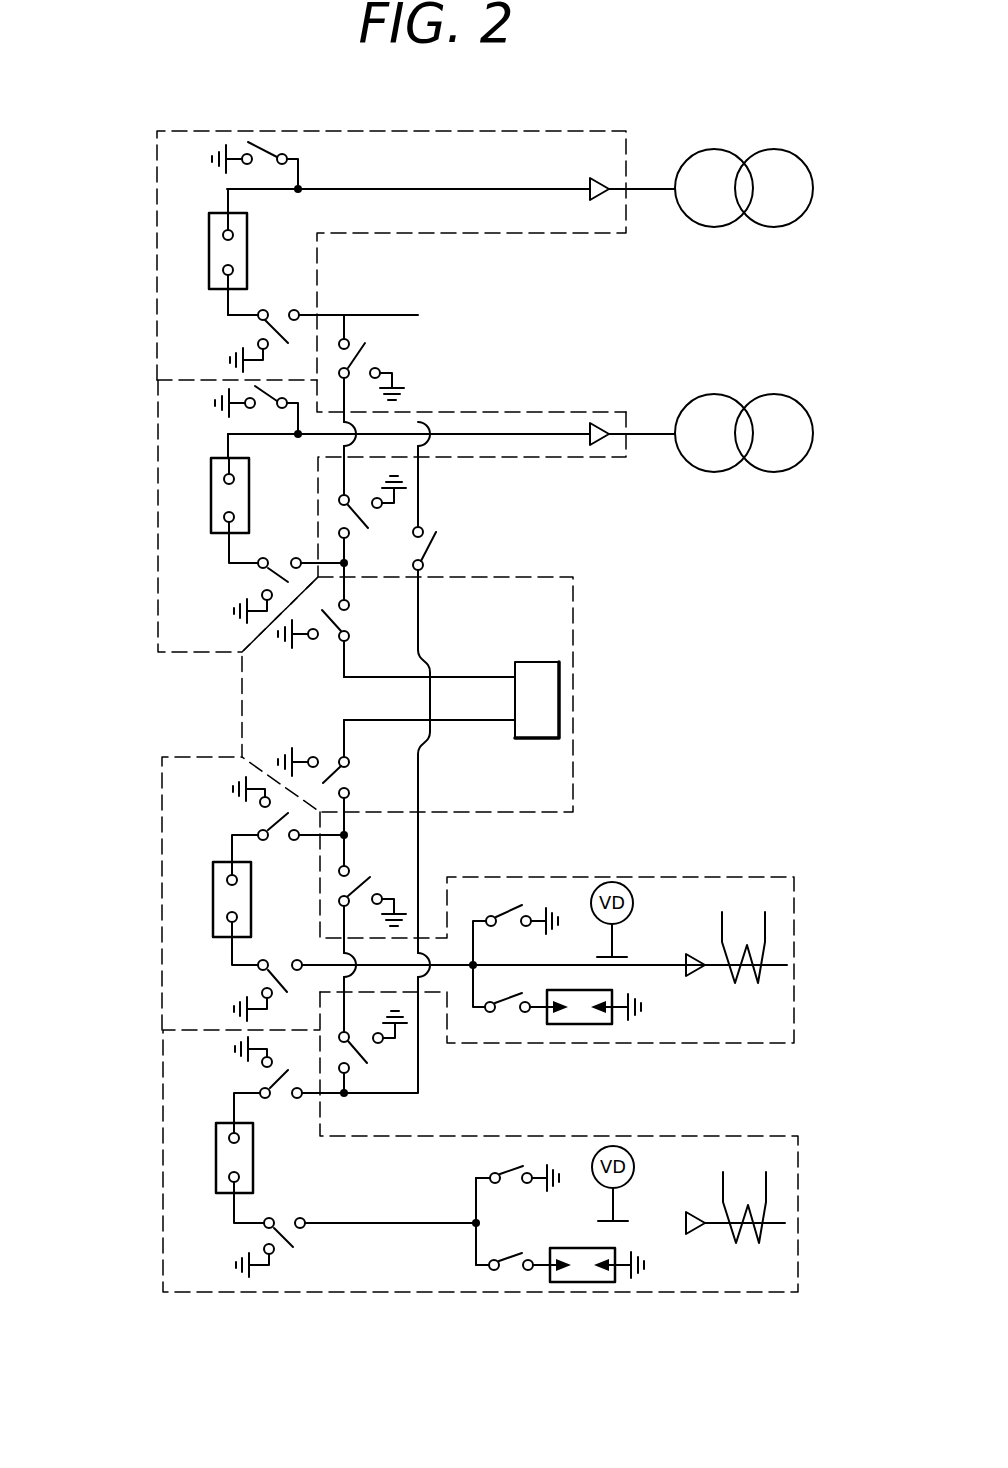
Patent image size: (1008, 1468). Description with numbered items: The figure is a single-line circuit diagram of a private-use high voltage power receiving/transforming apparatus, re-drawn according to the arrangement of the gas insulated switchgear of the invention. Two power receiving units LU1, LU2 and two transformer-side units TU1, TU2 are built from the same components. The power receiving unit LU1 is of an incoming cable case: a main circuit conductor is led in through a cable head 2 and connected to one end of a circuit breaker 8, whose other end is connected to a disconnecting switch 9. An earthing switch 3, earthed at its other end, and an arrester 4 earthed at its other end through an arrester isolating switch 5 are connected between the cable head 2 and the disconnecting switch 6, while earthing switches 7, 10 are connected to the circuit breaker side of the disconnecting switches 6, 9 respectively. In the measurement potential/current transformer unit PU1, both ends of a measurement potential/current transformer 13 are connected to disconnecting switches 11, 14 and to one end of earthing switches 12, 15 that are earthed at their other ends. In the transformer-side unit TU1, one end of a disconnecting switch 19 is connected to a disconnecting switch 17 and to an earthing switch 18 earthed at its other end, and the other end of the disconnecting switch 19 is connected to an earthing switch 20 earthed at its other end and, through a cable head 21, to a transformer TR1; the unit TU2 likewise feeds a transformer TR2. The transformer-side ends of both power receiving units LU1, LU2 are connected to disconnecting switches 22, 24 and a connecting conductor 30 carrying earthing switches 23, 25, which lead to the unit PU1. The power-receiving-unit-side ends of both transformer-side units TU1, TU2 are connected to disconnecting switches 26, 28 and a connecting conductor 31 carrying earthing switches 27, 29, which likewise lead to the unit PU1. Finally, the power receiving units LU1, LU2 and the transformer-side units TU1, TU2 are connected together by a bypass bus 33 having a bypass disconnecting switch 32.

The cable head 2 is at (693, 1212).
The earthing switch 3 is at (520, 1167).
The arrester 4 is at (587, 1285).
The arrester isolating switch 5 is at (520, 1255).
The disconnecting switch 6 is at (290, 1212).
The earthing switch 7 is at (264, 1276).
The circuit breaker 8 is at (216, 1152).
The disconnecting switch 9 is at (282, 1081).
The earthing switch 10 is at (255, 1055).
The disconnecting switch 11 is at (333, 777).
The earthing switch 12 is at (309, 757).
The measurement potential/current transformer 13 is at (540, 741).
The disconnecting switch 14 is at (337, 622).
The earthing switch 15 is at (304, 648).
The disconnecting switch 17 is at (280, 308).
The earthing switch 18 is at (256, 355).
The disconnecting switch 19 is at (209, 240).
The earthing switch 20 is at (265, 148).
The cable head 21 is at (590, 178).
The disconnecting switch 22 is at (367, 1063).
The earthing switch 23 is at (403, 1038).
The disconnecting switch 24 is at (357, 878).
The earthing switch 25 is at (382, 897).
The disconnecting switch 26 is at (360, 348).
The earthing switch 27 is at (388, 371).
The disconnecting switch 28 is at (357, 517).
The earthing switch 29 is at (385, 505).
The connecting conductor 30 is at (341, 918).
The connecting conductor 31 is at (346, 546).
The bypass disconnecting switch 32 is at (430, 545).
The bypass bus 33 is at (420, 840).
The transformer TR1 is at (795, 152).
The transformer TR2 is at (800, 403).
The transformer-side unit TU1 is at (155, 257).
The transformer-side unit TU2 is at (155, 474).
The measurement potential/current transformer unit PU1 is at (240, 706).
The power receiving unit LU1 is at (162, 1134).
The power receiving unit LU2 is at (160, 889).